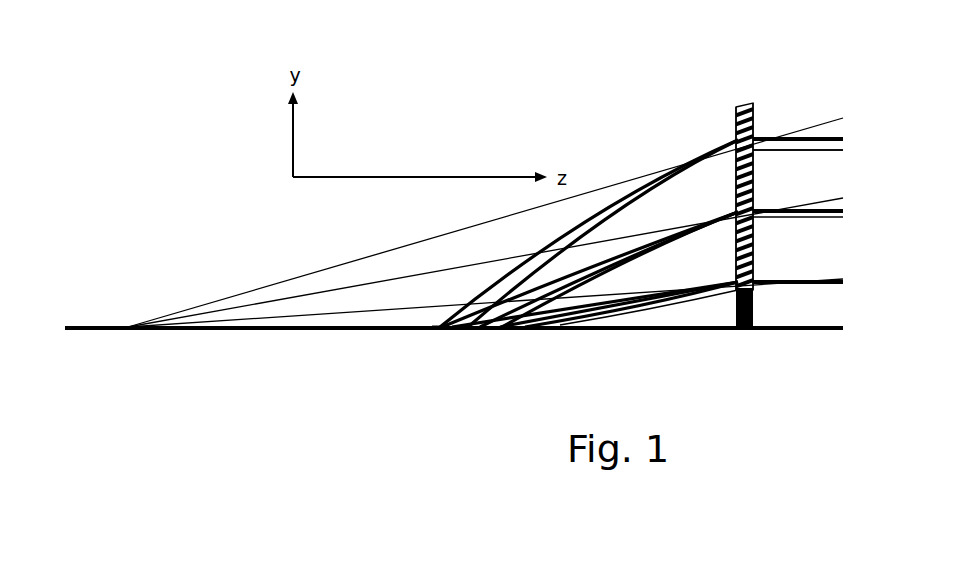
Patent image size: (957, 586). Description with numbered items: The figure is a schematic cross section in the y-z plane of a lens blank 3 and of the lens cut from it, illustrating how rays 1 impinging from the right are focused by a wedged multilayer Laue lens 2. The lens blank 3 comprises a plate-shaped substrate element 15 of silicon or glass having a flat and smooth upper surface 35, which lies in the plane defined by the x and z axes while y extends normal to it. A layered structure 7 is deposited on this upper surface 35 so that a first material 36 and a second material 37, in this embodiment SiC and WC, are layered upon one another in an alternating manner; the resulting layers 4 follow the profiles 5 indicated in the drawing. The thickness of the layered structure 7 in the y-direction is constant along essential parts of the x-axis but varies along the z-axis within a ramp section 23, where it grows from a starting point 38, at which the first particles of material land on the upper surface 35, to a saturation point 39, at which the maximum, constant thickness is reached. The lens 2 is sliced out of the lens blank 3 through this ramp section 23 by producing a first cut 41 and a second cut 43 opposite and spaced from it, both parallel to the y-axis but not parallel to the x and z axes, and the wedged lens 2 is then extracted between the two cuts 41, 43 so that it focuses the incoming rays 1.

The rays 1 is at (830, 150).
The wedged multilayer Laue lens 2 is at (747, 86).
The lens blank 3 is at (805, 165).
The layers 4 is at (786, 253).
The profiles 5 is at (601, 270).
The layered structure 7 is at (796, 114).
The substrate element 15 is at (637, 327).
The ramp section 23 is at (843, 345).
The upper surface 35 is at (410, 318).
The first material 36 is at (750, 263).
The second material 37 is at (748, 253).
The starting point 38 is at (438, 326).
The saturation point 39 is at (843, 135).
The first cut 41 is at (736, 119).
The second cut 43 is at (753, 118).